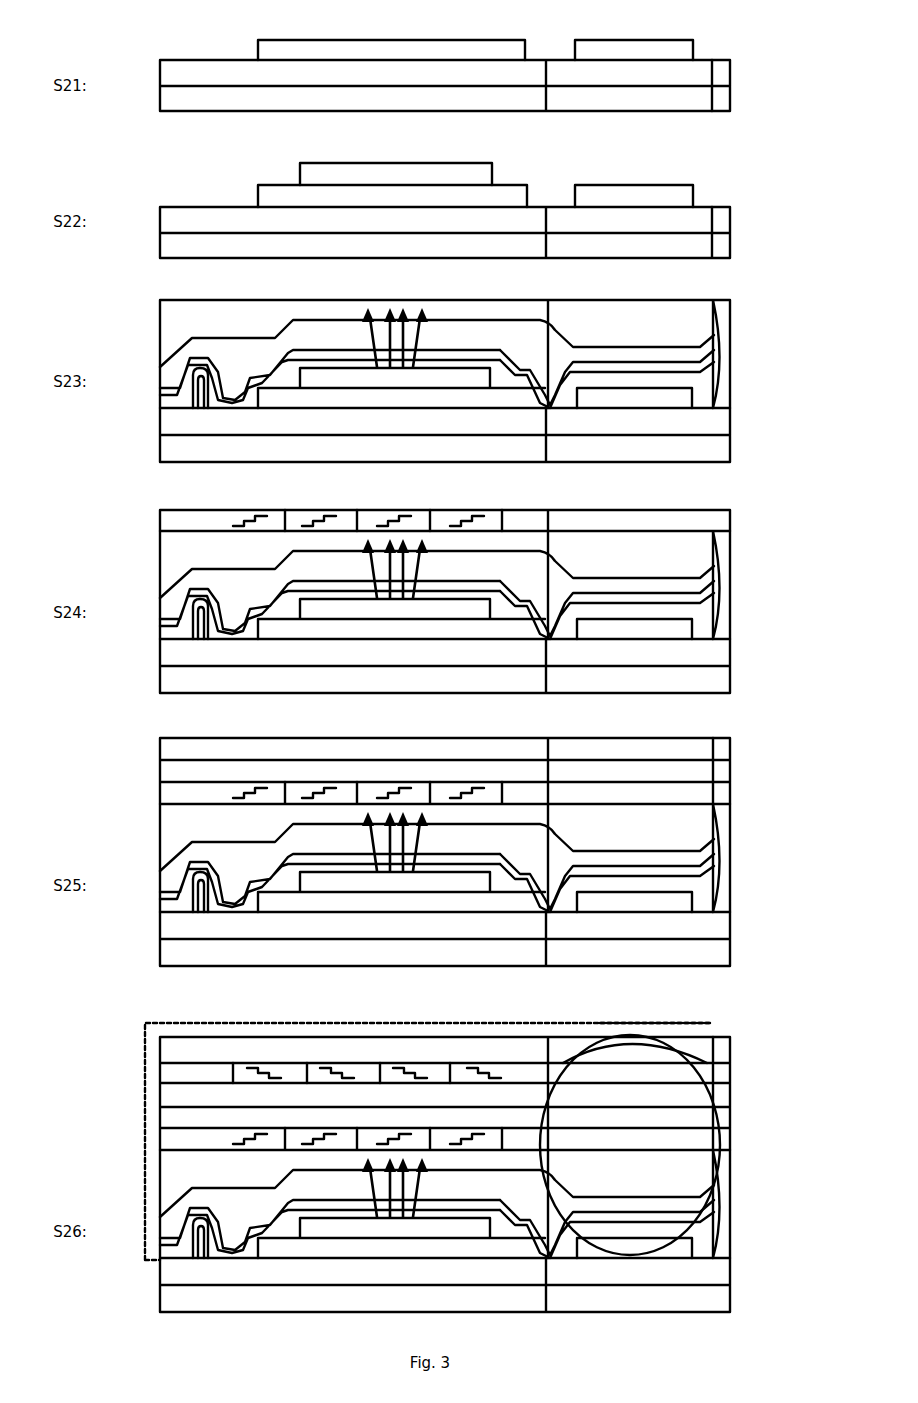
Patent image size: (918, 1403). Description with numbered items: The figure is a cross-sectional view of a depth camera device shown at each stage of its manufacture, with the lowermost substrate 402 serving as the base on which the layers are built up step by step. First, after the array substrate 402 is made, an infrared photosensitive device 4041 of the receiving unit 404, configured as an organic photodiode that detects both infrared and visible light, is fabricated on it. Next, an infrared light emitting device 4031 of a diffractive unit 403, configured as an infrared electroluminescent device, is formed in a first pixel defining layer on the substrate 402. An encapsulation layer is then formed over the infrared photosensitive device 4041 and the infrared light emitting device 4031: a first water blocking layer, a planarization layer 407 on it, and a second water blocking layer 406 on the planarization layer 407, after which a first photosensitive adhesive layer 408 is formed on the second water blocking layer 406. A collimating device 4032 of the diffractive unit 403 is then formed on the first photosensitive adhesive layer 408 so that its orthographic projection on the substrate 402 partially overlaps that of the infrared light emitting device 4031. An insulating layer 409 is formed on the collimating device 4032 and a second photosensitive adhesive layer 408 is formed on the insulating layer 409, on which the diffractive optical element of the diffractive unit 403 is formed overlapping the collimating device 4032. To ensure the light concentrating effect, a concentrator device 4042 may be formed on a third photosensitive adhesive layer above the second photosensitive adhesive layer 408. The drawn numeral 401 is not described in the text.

The substrate 401 is at (165, 100).
The substrate 402 is at (720, 78).
The diffractive unit 403 is at (185, 1024).
The receiving unit 404 is at (605, 1024).
The second water blocking layer 406 is at (602, 350).
The planarization layer 407 is at (218, 372).
The photosensitive adhesive layer 408 is at (170, 337).
The insulating layer 409 is at (722, 776).
The infrared light emitting device 4031 is at (468, 165).
The collimating device 4032 is at (278, 510).
The infrared photosensitive device 4041 is at (633, 40).
The concentrator device 4042 is at (617, 1063).